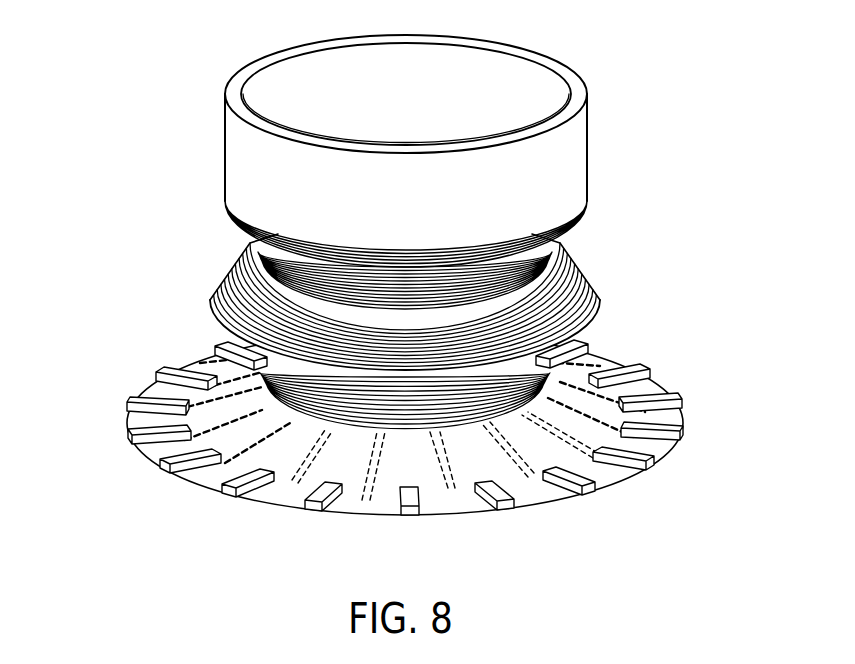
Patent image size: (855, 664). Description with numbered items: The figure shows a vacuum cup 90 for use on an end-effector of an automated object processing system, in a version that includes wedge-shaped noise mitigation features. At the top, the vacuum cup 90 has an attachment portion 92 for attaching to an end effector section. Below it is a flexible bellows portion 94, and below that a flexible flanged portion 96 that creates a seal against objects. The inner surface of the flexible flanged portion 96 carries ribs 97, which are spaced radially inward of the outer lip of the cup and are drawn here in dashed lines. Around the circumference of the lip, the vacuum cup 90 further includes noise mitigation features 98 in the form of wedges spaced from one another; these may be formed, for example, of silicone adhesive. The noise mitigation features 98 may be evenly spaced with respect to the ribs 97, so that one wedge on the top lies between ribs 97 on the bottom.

The vacuum cup 90 is at (117, 85).
The attachment portion 92 is at (582, 95).
The flexible bellows portion 94 is at (603, 283).
The flexible flanged portion 96 is at (598, 371).
The ribs 97 is at (363, 503).
The noise mitigation features 98 is at (683, 430).